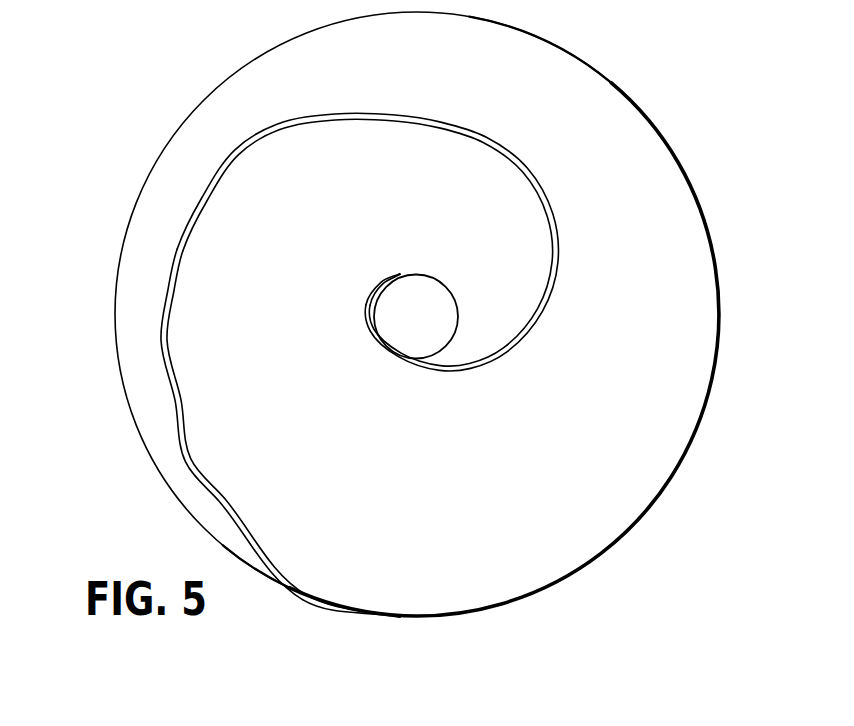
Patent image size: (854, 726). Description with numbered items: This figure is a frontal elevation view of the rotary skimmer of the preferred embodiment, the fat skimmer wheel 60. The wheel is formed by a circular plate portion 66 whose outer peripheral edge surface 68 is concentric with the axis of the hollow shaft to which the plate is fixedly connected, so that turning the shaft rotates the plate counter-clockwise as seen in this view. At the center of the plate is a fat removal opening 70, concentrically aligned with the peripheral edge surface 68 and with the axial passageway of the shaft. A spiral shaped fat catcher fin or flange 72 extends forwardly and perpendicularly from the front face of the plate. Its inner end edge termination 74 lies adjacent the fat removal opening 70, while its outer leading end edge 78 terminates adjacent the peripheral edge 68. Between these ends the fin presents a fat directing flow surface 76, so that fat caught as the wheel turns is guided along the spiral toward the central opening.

The fat skimmer wheel 60 is at (134, 138).
The circular plate portion 66 is at (582, 82).
The outer peripheral edge surface 68 is at (719, 268).
The fat removal opening 70 is at (440, 294).
The spiral shaped fat catcher fin or flange 72 is at (552, 212).
The inner end edge termination 74 is at (399, 274).
The fat directing flow surface 76 is at (178, 420).
The outer leading end edge 78 is at (410, 606).